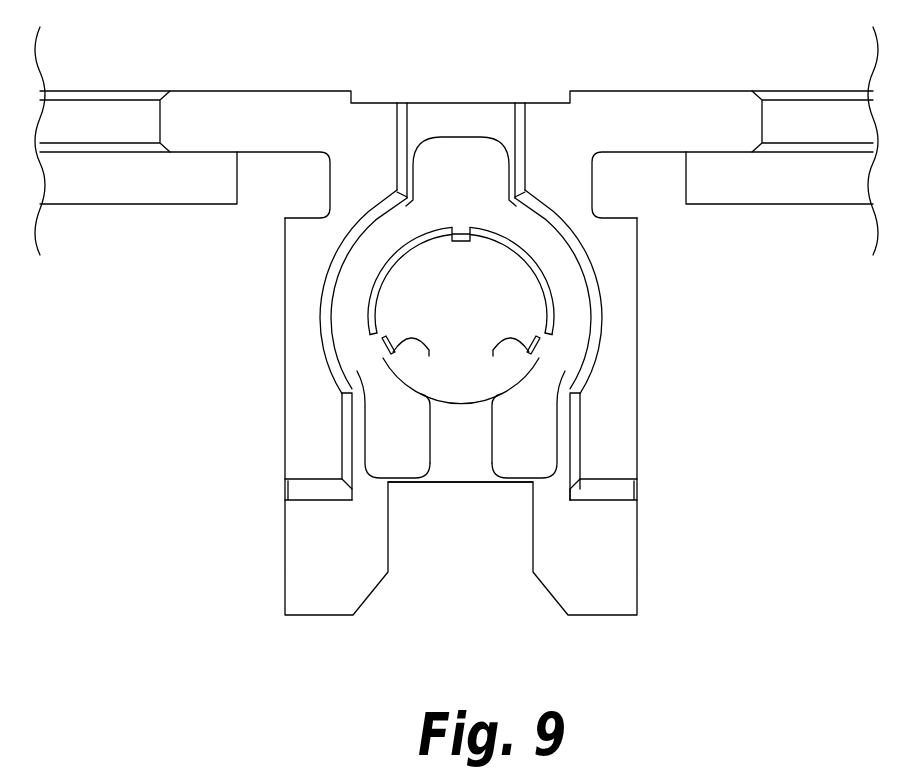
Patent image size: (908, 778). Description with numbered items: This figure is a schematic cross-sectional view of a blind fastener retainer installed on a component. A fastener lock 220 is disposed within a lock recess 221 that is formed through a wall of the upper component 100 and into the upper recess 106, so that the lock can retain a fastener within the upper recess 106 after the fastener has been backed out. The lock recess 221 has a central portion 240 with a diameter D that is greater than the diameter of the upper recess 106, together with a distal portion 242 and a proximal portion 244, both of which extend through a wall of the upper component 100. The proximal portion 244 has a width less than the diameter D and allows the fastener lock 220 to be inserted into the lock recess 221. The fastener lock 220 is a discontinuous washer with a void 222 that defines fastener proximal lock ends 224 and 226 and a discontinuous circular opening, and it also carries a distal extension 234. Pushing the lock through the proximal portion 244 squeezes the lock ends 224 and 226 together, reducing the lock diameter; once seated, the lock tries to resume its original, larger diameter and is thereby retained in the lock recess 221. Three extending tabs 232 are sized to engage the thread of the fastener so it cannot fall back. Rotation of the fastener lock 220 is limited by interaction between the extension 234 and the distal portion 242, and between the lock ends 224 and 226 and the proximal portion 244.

The upper component 100 is at (690, 108).
The upper recess 106 is at (533, 277).
The fastener lock 220 is at (357, 278).
The lock recess 221 is at (510, 112).
The void 222 is at (461, 474).
The fastener proximal lock end 224 is at (381, 452).
The fastener proximal lock end 226 is at (540, 470).
The extending tab 232 is at (465, 243).
The distal extension 234 is at (458, 157).
The central portion 240 is at (600, 322).
The distal portion 242 is at (422, 113).
The proximal portion 244 is at (571, 481).
The diameter D is at (576, 318).